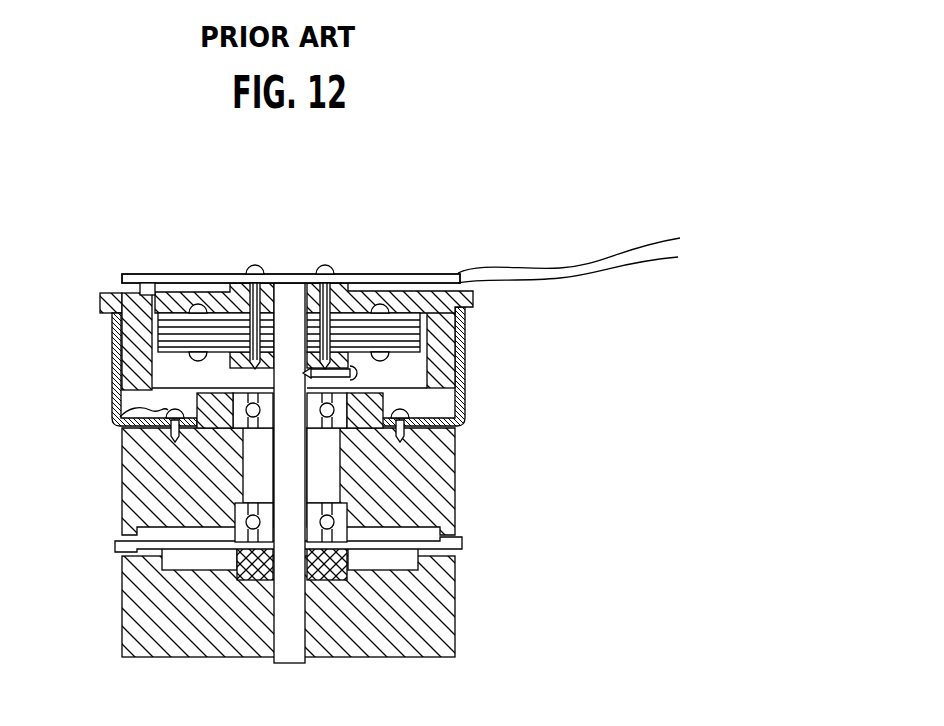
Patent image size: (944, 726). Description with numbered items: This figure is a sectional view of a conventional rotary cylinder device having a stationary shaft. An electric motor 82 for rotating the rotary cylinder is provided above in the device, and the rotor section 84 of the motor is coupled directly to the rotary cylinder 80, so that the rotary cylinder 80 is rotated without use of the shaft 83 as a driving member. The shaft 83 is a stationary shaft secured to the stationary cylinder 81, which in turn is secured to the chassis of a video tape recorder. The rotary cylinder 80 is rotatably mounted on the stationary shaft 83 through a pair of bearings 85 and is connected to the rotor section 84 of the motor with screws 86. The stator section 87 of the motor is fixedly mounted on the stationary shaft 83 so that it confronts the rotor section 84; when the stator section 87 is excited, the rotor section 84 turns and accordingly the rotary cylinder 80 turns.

The rotary cylinder 80 is at (445, 505).
The stationary cylinder 81 is at (442, 607).
The electric motor 82 is at (361, 453).
The shaft 83 is at (293, 658).
The rotor section 84 is at (466, 355).
The bearings 85 is at (343, 518).
The screws 86 is at (113, 418).
The stator section 87 is at (200, 280).